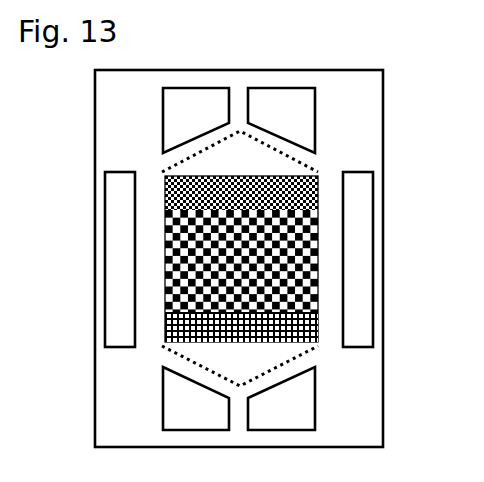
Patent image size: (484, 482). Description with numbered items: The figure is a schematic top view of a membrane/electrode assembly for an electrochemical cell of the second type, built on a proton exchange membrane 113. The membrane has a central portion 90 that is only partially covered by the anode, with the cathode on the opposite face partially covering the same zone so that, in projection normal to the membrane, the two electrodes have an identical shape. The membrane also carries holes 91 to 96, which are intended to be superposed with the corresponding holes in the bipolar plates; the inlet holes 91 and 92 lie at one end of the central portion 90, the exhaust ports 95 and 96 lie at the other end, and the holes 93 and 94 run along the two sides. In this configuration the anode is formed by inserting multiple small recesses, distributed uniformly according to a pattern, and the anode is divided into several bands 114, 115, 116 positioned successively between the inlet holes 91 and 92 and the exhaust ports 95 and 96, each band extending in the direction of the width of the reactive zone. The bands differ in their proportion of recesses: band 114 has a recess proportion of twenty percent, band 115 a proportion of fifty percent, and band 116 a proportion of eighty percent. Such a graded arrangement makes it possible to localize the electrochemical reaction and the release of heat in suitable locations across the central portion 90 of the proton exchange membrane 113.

The central portion 90 is at (162, 205).
The inlet hole 91 is at (297, 124).
The inlet hole 92 is at (204, 124).
The hole 93 is at (371, 242).
The hole 94 is at (133, 243).
The exhaust port 95 is at (298, 419).
The exhaust port 96 is at (204, 419).
The proton exchange membrane 113 is at (391, 258).
The band 114 is at (327, 185).
The band 115 is at (327, 262).
The band 116 is at (327, 327).